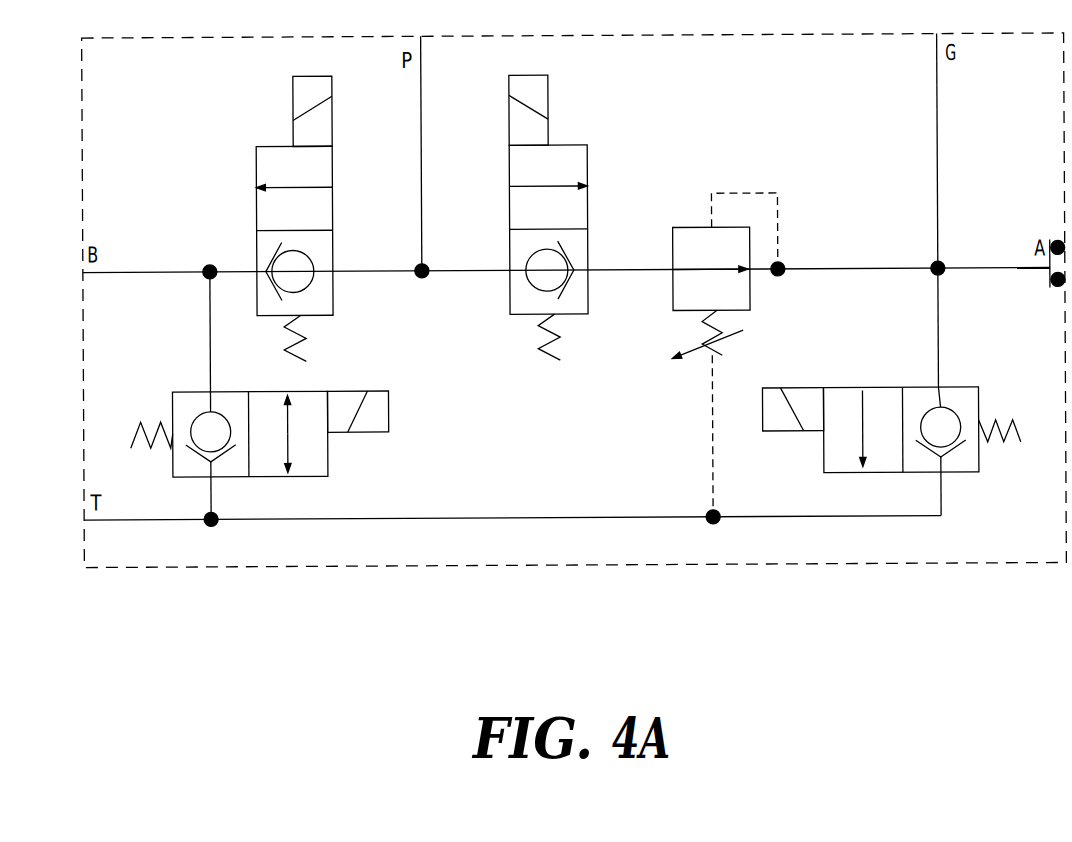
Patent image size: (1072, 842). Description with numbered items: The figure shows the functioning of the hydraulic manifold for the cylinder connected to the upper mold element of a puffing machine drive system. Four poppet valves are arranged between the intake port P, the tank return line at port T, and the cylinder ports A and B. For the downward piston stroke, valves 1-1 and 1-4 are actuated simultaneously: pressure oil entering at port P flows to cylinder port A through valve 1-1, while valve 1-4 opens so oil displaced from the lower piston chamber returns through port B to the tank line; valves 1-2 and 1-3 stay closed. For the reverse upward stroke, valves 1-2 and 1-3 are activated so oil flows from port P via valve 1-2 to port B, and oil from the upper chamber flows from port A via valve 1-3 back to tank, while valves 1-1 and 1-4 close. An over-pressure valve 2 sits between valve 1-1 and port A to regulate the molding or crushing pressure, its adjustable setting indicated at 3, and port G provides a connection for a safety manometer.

The poppet valve 1-1 is at (548, 218).
The poppet valve 1-2 is at (274, 219).
The poppet valve 1-3 is at (891, 416).
The poppet valve 1-4 is at (259, 422).
The pressure valve 2 is at (738, 355).
The relief valve adjustment 3 is at (707, 358).